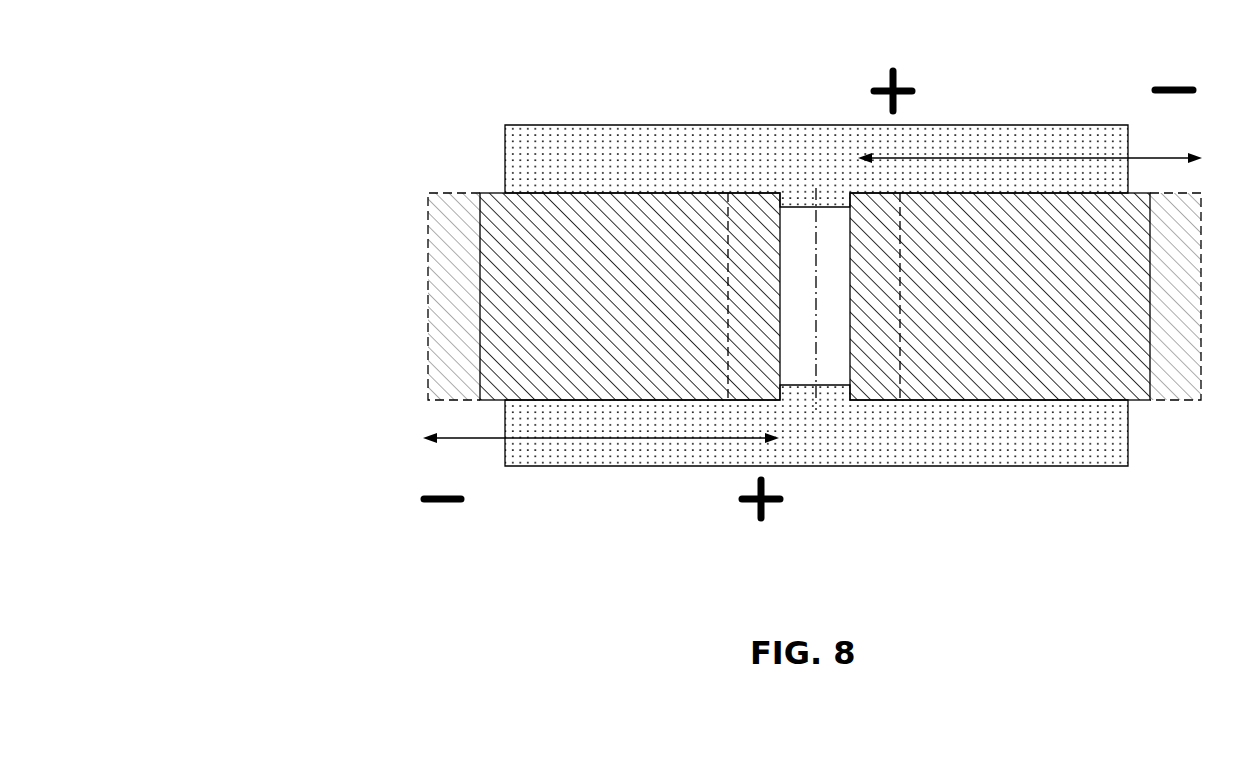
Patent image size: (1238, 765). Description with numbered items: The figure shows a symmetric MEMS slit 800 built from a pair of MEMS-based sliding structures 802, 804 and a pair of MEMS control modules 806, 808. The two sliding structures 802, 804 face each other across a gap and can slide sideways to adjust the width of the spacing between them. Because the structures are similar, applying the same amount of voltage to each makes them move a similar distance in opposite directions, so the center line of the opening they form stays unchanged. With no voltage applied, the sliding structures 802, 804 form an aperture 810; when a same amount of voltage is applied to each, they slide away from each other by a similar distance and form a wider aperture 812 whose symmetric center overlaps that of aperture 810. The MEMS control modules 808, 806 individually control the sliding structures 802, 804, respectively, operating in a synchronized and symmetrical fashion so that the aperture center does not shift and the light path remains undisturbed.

The symmetric MEMS slit 800 is at (718, 283).
The MEMS-based sliding structure 802 is at (465, 205).
The MEMS-based sliding structure 804 is at (1148, 373).
The MEMS control module 806 is at (711, 126).
The MEMS control module 808 is at (912, 467).
The aperture 810 is at (850, 273).
The aperture 812 is at (900, 307).